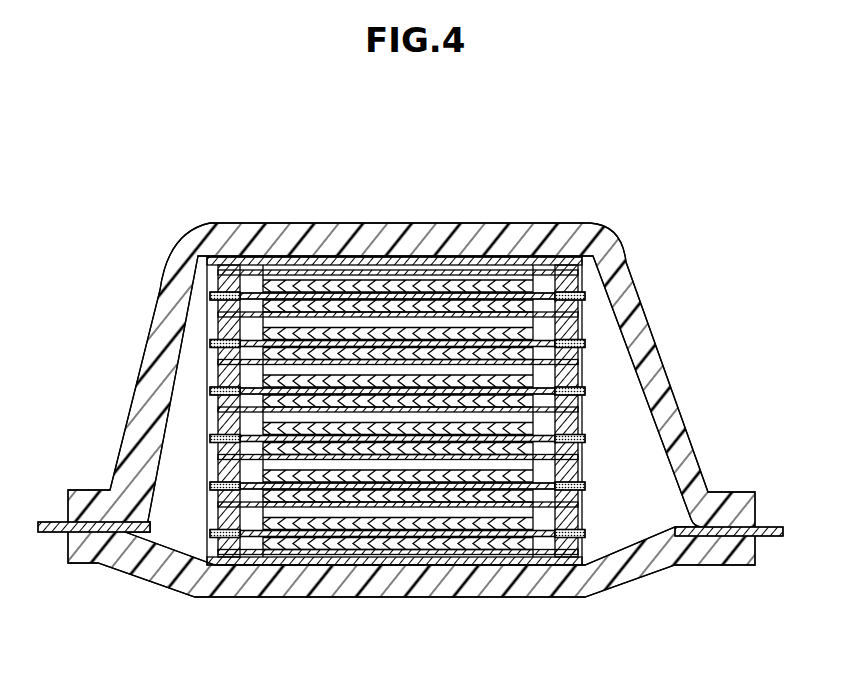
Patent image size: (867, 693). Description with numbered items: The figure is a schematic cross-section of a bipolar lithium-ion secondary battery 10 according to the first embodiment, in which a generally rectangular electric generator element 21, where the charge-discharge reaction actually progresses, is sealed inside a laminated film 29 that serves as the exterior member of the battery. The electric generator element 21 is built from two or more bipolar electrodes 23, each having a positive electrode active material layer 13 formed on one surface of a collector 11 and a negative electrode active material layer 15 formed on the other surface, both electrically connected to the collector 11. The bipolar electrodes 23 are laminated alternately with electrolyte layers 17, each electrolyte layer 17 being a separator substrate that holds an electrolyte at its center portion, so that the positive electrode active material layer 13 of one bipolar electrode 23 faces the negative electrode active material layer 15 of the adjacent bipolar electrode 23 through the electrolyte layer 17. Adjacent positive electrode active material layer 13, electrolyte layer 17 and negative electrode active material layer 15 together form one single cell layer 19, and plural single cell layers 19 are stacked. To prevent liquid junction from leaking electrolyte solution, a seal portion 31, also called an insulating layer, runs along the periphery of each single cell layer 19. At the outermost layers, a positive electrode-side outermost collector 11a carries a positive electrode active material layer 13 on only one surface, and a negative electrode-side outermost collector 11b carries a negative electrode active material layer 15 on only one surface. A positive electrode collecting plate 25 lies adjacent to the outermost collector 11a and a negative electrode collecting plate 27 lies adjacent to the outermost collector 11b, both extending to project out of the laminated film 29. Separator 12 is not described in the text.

The bipolar lithium-ion secondary battery 10 is at (112, 206).
The collector 11 is at (430, 314).
The positive electrode-side outermost collector 11a is at (478, 256).
The negative electrode-side outermost collector 11b is at (498, 566).
The separator 12 is at (355, 320).
The positive electrode active material layer 13 is at (385, 328).
The negative electrode active material layer 15 is at (292, 345).
The electrolyte layer 17 is at (322, 330).
The single cell layer 19 is at (405, 175).
The electric generator element 21 is at (592, 470).
The bipolar electrode 23 is at (418, 640).
The positive electrode collecting plate 25 is at (57, 521).
The negative electrode collecting plate 27 is at (768, 526).
The laminated film 29 is at (733, 491).
The seal portion 31 is at (568, 307).